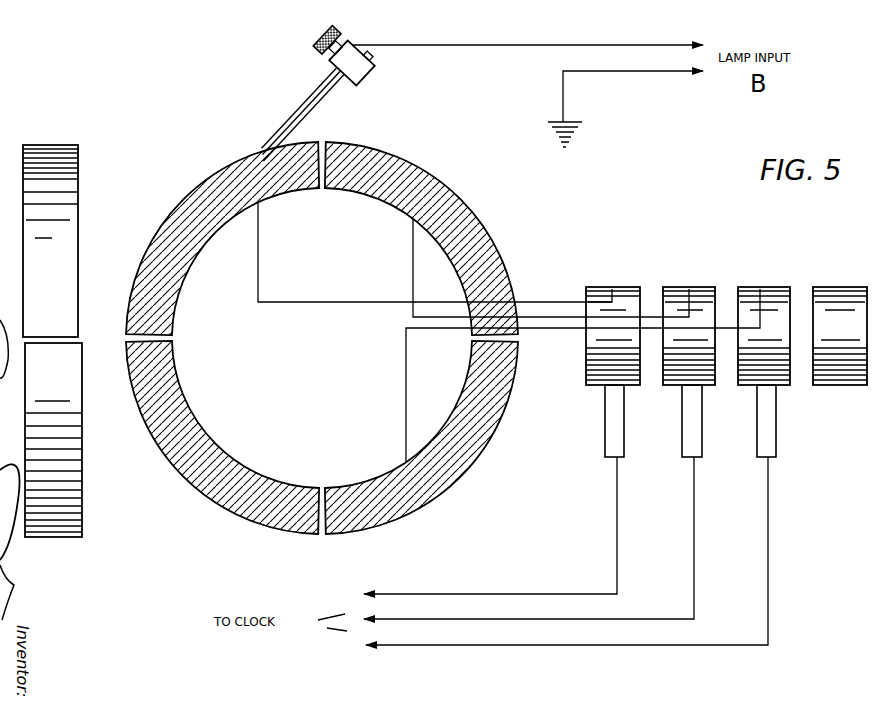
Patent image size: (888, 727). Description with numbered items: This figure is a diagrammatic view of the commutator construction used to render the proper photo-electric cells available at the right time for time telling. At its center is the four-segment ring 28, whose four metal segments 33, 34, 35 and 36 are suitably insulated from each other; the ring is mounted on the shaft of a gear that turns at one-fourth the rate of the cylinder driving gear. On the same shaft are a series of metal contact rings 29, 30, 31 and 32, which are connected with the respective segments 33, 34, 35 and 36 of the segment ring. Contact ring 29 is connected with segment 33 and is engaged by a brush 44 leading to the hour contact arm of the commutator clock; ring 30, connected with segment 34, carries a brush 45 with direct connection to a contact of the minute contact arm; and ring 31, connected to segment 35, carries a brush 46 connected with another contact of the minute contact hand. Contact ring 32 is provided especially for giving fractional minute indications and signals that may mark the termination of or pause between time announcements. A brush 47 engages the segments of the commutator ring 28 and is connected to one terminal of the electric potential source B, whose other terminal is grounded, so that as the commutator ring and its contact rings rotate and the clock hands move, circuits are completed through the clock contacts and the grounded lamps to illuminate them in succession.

The four-segment ring 28 is at (76, 178).
The contact ring 29 is at (598, 290).
The contact ring 30 is at (694, 292).
The contact ring 31 is at (773, 292).
The contact ring 32 is at (840, 298).
The segment 33 is at (210, 240).
The segment 34 is at (407, 202).
The segment 35 is at (470, 370).
The segment 36 is at (231, 462).
The brush 44 is at (605, 410).
The brush 45 is at (682, 410).
The brush 46 is at (757, 408).
The brush 47 is at (313, 118).